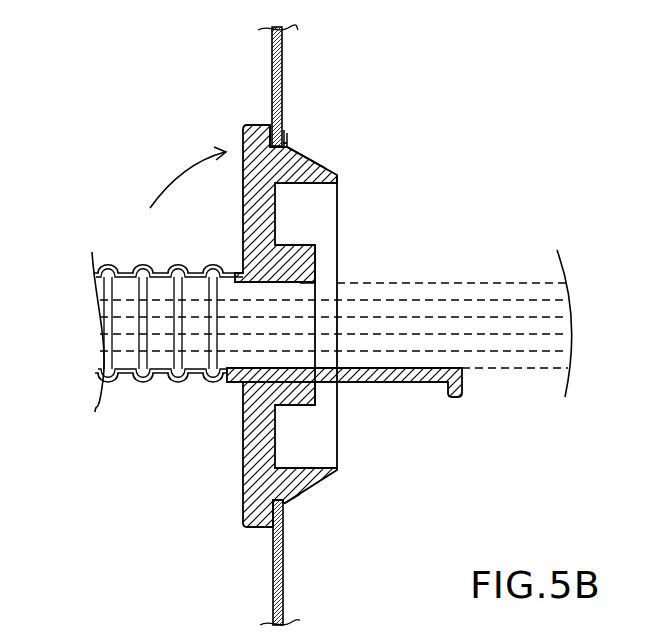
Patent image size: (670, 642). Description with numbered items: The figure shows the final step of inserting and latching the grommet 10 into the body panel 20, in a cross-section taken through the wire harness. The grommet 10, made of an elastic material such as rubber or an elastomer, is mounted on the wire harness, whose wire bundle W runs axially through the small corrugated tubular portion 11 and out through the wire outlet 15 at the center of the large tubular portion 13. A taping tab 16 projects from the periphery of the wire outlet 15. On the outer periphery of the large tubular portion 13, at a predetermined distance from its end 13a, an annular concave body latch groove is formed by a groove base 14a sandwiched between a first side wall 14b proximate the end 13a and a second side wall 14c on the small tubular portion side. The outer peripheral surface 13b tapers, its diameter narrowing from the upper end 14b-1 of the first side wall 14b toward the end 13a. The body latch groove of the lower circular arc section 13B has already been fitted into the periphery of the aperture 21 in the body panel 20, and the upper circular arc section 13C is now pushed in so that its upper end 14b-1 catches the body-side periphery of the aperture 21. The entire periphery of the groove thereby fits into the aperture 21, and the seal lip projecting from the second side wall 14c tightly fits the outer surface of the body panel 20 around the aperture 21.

The grommet 10 is at (100, 198).
The small corrugated tubular portion 11 is at (145, 258).
The large tubular portion 13 is at (243, 128).
The end 13a is at (340, 177).
The outer peripheral surface 13b is at (312, 152).
The upper circular arc section 13C is at (290, 145).
The lower circular arc section 13B is at (287, 509).
The groove base 14a is at (283, 132).
The first side wall 14b is at (285, 135).
The upper end of first side wall 14b-1 is at (287, 140).
The second side wall 14c is at (271, 122).
The wire outlet 15 is at (290, 283).
The taping tab 16 is at (412, 384).
The body panel 20 is at (285, 578).
The aperture 21 is at (278, 518).
The wire bundle W is at (493, 310).